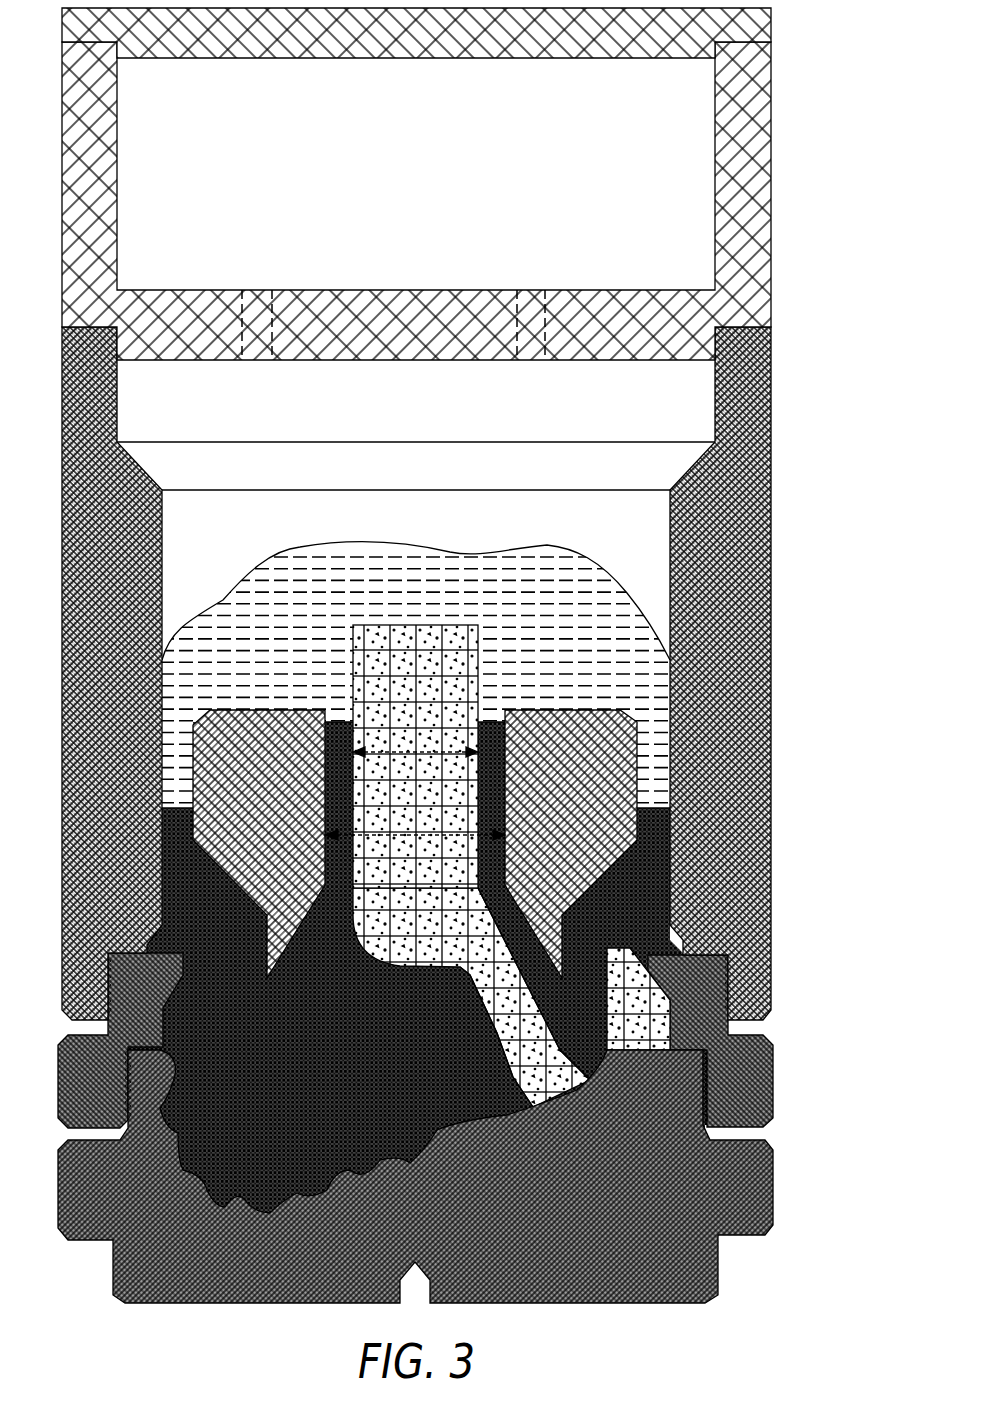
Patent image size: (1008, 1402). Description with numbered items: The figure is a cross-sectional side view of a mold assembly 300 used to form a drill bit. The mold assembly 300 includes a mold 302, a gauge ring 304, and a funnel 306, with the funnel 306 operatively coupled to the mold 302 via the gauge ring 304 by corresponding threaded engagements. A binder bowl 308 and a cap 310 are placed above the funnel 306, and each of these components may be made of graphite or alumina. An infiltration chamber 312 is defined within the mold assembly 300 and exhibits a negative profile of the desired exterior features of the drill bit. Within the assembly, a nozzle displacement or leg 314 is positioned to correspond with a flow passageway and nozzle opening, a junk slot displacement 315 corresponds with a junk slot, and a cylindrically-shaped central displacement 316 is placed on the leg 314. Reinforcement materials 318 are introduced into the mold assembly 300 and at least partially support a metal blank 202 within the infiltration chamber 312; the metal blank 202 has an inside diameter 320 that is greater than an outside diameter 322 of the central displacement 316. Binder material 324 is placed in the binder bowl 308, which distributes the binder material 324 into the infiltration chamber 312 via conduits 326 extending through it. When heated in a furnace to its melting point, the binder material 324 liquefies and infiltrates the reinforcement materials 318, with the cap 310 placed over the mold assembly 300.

The mold assembly 300 is at (565, 1314).
The mold 302 is at (795, 1189).
The gauge ring 304 is at (795, 1077).
The funnel 306 is at (796, 587).
The binder bowl 308 is at (778, 243).
The cap 310 is at (778, 22).
The infiltration chamber 312 is at (238, 532).
The nozzle displacement (leg) 314 is at (562, 1090).
The junk slot displacement 315 is at (656, 1024).
The central displacement 316 is at (434, 704).
The reinforcement materials 318 is at (327, 1083).
The inside diameter 320 is at (378, 834).
The outside diameter 322 is at (427, 754).
The binder material 324 is at (468, 548).
The conduits 326 is at (243, 332).
The metal blank 202 is at (589, 799).